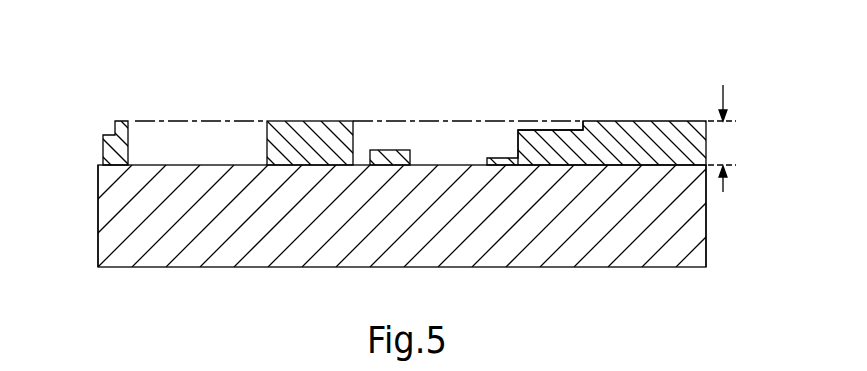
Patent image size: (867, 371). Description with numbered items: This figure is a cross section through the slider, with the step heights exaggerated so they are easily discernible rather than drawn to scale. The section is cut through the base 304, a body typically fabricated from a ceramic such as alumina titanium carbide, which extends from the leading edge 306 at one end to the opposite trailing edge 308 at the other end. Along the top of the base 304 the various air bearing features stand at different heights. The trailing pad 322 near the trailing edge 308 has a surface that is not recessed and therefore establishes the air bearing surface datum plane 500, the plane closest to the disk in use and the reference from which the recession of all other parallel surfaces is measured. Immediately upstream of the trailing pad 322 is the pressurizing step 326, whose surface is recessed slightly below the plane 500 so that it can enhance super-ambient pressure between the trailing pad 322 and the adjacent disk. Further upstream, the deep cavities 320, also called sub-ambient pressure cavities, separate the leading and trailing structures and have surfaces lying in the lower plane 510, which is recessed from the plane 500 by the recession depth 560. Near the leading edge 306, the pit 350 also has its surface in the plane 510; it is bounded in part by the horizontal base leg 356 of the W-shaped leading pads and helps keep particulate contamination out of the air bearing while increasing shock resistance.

The base 304 is at (627, 253).
The leading edge 306 is at (98, 237).
The trailing edge 308 is at (706, 228).
The deep cavities 320 is at (442, 165).
The trailing pad 322 is at (623, 121).
The pressurizing step 326 is at (543, 130).
The pit 350 is at (188, 165).
The horizontal base leg 356 is at (123, 121).
The air bearing surface datum plane 500 is at (454, 120).
The plane 510 is at (740, 172).
The recession depth 560 is at (723, 90).